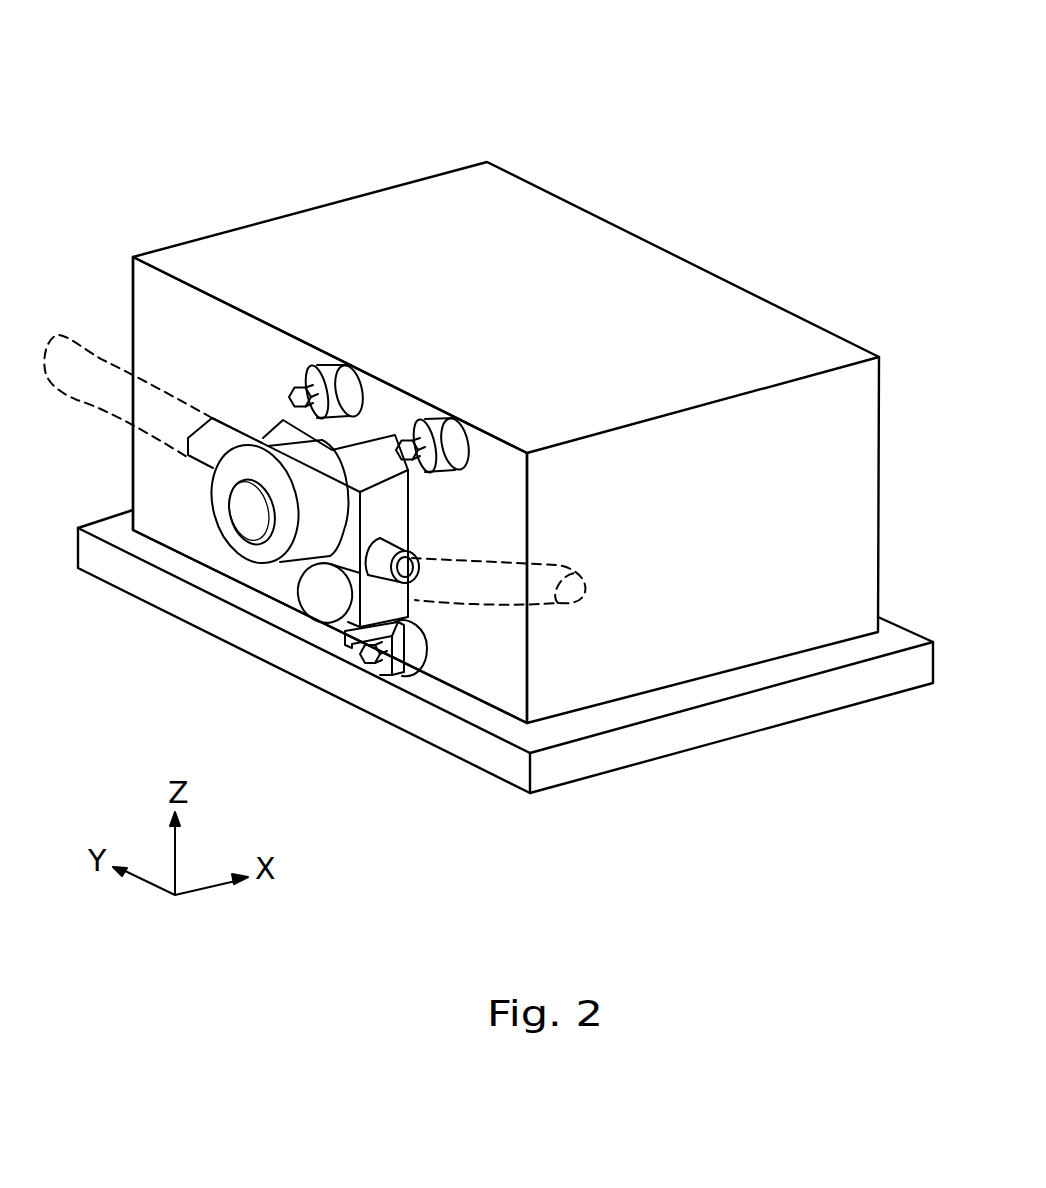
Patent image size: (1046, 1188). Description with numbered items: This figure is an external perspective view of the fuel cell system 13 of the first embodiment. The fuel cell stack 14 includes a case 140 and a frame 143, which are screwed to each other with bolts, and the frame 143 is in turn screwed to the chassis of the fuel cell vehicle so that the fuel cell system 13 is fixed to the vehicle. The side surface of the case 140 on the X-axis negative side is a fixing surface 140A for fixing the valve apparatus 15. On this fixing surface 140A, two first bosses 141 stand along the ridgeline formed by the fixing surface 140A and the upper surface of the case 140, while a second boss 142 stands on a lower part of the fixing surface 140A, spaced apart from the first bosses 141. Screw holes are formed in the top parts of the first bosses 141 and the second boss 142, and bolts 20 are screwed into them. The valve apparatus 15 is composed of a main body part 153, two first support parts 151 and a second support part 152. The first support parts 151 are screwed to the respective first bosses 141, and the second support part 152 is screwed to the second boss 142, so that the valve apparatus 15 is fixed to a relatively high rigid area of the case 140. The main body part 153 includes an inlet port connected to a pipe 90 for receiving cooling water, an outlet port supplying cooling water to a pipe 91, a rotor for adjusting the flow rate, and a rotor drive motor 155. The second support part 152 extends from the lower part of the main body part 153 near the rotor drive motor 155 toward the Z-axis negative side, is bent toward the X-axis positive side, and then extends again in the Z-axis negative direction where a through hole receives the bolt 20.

The fuel cell system 13 is at (252, 122).
The fuel cell stack 14 is at (912, 229).
The valve apparatus 15 is at (192, 510).
The bolt 20 is at (293, 397).
The pipe 90 is at (103, 360).
The pipe 91 is at (537, 605).
The case 140 is at (820, 318).
The fixing surface 140A is at (293, 353).
The first boss 141 is at (337, 370).
The second boss 142 is at (415, 660).
The frame 143 is at (905, 643).
The first support part 151 is at (277, 407).
The second support part 152 is at (327, 627).
The main body part 153 is at (228, 538).
The rotor drive motor 155 is at (312, 602).